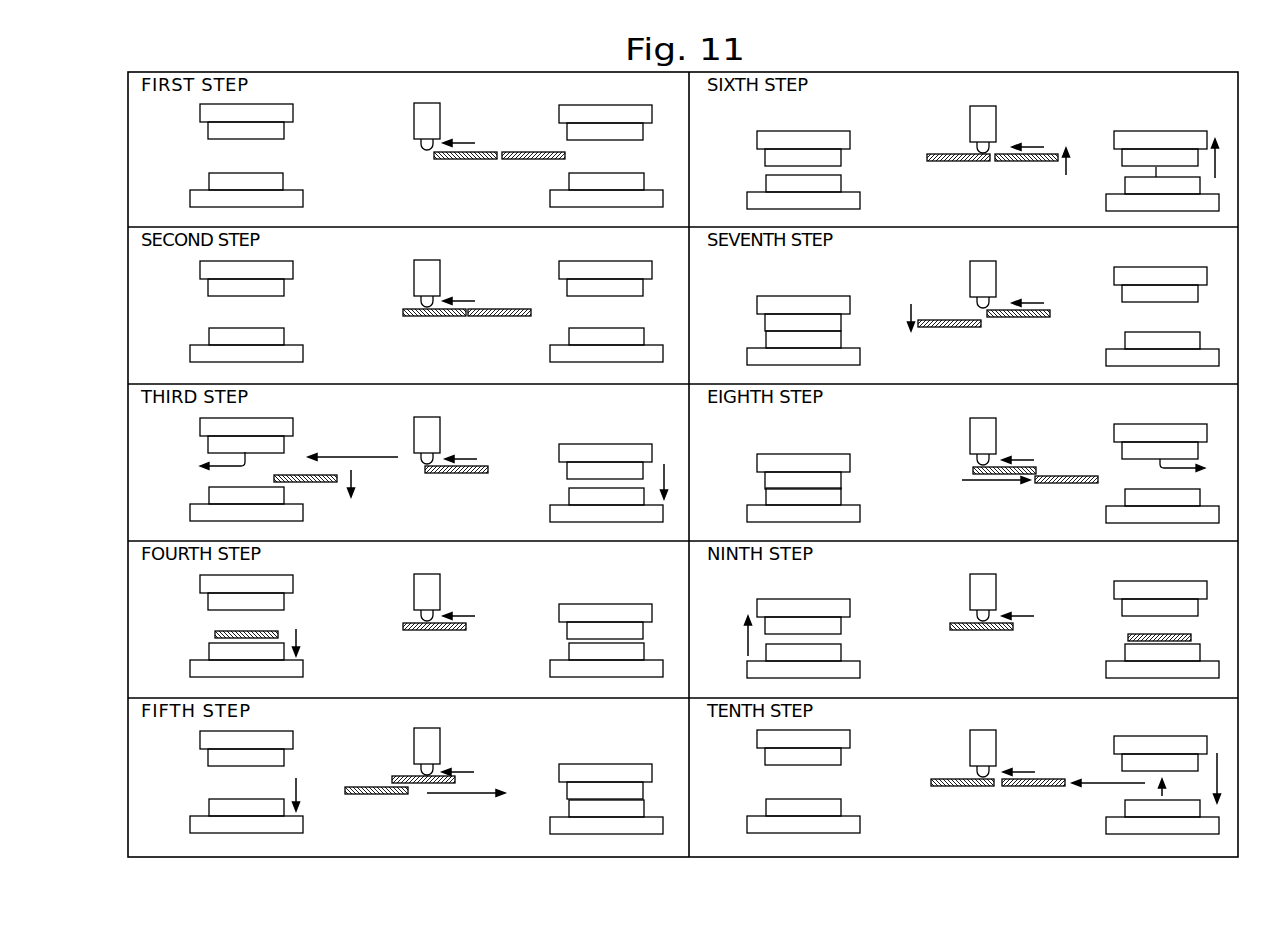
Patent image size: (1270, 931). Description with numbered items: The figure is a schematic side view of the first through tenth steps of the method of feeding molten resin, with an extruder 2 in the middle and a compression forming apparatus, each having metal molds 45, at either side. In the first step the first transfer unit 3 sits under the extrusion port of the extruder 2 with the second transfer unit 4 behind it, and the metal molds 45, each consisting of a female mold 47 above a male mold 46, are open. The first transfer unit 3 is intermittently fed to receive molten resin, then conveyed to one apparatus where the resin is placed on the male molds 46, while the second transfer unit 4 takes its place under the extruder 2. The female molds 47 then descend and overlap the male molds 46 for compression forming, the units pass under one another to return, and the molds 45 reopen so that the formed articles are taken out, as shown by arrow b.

The metal mold 45 is at (711, 457).
The female mold 47 is at (211, 133).
The male mold 46 is at (280, 181).
The extruder 2 is at (686, 436).
The first transfer unit 3 is at (462, 159).
The second transfer unit 4 is at (523, 159).
The arrow indicating take-out of formed articles b is at (221, 468).